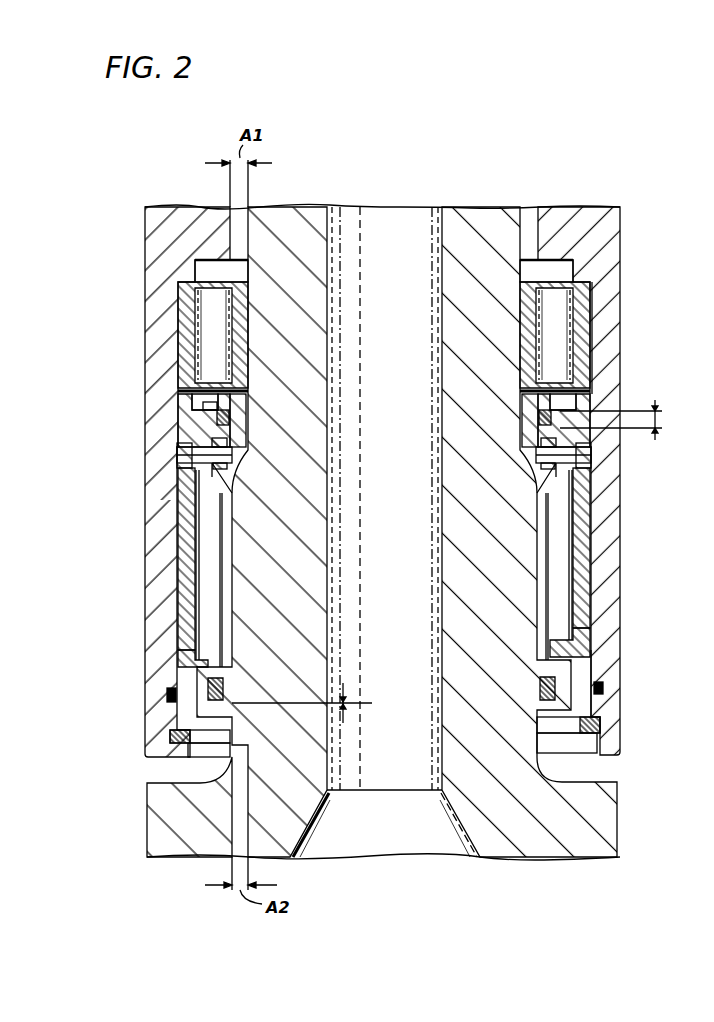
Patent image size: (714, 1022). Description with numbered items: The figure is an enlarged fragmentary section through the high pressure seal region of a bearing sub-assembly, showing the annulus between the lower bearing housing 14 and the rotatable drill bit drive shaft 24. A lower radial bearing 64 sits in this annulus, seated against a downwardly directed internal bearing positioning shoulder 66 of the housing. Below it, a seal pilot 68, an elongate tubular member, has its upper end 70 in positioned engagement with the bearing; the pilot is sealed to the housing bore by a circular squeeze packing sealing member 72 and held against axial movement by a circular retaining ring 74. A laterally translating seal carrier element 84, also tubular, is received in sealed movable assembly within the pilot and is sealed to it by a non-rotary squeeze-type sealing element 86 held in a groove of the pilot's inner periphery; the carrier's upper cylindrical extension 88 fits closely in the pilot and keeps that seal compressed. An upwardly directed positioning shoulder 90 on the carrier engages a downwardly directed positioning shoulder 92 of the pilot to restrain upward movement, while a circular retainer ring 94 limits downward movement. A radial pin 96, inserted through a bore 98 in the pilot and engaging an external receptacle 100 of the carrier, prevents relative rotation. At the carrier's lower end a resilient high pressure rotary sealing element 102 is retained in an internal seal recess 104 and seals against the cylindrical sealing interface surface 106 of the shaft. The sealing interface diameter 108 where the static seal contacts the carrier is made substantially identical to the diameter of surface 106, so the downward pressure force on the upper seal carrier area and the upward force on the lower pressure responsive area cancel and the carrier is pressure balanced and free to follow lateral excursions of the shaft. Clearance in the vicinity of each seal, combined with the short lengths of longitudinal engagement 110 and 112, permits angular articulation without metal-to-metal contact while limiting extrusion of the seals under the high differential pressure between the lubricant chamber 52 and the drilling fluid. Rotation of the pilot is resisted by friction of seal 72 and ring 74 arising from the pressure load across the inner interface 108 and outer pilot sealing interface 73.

The lower bearing housing 14 is at (152, 243).
The rotatable drill bit drive shaft 24 is at (607, 821).
The lubricant chamber 52 is at (230, 400).
The lower radial bearing 64 is at (185, 340).
The internal bearing positioning shoulder 66 is at (600, 277).
The seal pilot 68 is at (222, 415).
The upper end of seal pilot 70 is at (592, 358).
The circular squeeze packing sealing member 72 is at (602, 690).
The outer pilot sealing interface 73 is at (600, 650).
The circular retaining ring 74 is at (585, 742).
The laterally translating seal carrier element 84 is at (225, 565).
The non-rotary squeeze-type sealing element 86 is at (217, 413).
The upper cylindrical extension 88 is at (518, 407).
The upwardly directed positioning shoulder 90 is at (565, 432).
The downwardly directed positioning shoulder 92 is at (245, 440).
The circular retainer ring 94 is at (590, 398).
The radial pin 96 is at (215, 455).
The bore 98 is at (185, 500).
The external receptacle 100 is at (240, 460).
The resilient high pressure rotary sealing element 102 is at (212, 682).
The internal seal recess 104 is at (575, 706).
The cylindrical sealing interface surface 106 is at (225, 738).
The sealing interface diameter 108 is at (227, 437).
The longitudinal engagement 110 is at (660, 425).
The longitudinal engagement 112 is at (322, 702).